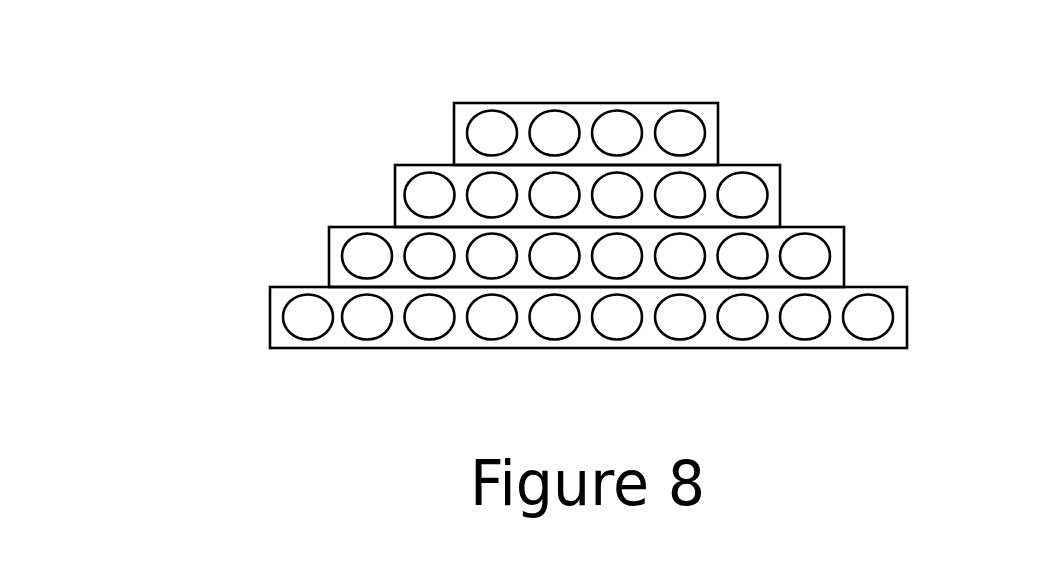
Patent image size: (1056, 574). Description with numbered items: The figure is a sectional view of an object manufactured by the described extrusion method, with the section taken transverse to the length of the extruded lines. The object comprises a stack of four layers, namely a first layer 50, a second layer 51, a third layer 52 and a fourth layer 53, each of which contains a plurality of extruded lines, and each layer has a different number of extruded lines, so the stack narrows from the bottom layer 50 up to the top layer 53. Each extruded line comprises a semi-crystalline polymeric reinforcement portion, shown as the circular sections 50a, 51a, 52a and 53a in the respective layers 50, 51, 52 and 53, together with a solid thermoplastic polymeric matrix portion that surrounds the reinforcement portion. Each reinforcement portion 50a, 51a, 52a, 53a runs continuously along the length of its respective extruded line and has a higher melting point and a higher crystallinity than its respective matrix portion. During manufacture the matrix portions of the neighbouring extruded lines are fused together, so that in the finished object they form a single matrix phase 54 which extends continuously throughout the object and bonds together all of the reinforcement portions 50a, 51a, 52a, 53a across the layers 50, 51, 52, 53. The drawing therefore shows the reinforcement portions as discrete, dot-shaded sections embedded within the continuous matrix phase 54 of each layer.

The first layer 50 is at (492, 290).
The reinforcement portion 50a is at (286, 286).
The second layer 51 is at (674, 233).
The reinforcement portion 51a is at (808, 257).
The third layer 52 is at (494, 172).
The reinforcement portion 52a is at (409, 168).
The fourth layer 53 is at (666, 100).
The reinforcement portion 53a is at (683, 130).
The matrix phase 54 is at (523, 114).